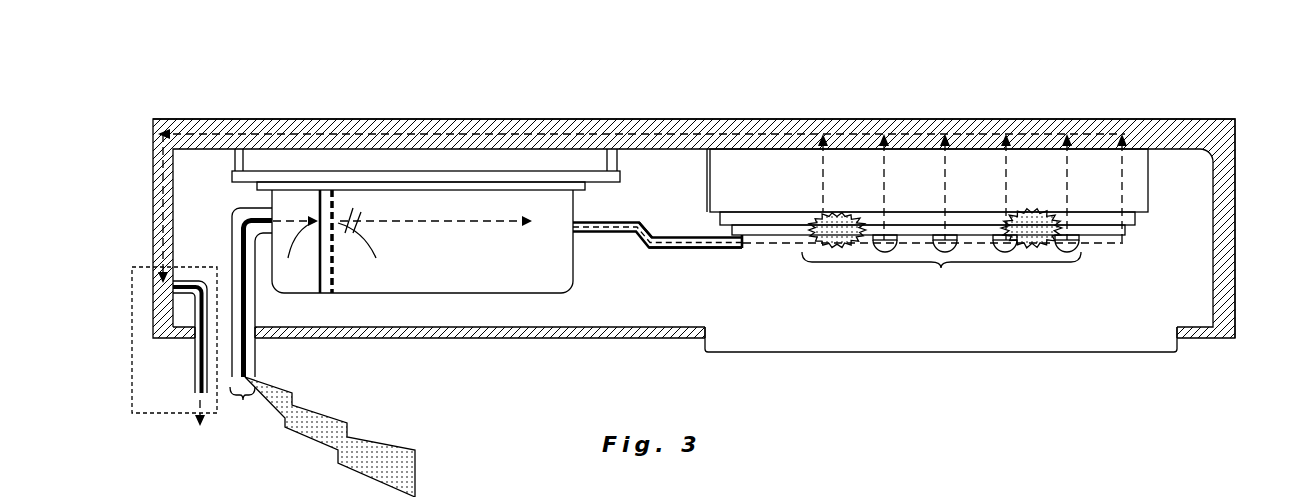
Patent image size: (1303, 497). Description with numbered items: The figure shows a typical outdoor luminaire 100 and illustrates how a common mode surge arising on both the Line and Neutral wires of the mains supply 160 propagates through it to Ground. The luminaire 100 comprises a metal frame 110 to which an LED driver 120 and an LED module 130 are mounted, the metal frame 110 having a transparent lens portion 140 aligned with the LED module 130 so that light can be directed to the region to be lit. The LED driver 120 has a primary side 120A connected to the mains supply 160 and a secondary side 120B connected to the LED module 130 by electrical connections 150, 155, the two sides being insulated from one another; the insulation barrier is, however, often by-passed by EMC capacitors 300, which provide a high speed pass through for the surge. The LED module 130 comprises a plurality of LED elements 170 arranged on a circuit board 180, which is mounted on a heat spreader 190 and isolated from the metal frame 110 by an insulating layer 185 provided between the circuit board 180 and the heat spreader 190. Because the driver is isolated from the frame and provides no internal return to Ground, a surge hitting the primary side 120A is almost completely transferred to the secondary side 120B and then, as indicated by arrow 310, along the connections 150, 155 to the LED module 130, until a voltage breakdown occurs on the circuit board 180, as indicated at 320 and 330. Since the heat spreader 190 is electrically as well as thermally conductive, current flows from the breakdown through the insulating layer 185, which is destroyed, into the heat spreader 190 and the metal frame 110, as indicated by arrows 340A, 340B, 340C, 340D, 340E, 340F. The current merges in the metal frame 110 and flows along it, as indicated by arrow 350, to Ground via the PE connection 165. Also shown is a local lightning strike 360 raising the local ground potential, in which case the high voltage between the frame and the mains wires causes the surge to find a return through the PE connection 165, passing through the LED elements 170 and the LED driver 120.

The luminaire 100 is at (1225, 105).
The metal frame 110 is at (1142, 142).
The LED driver 120 is at (427, 173).
The primary side 120A is at (296, 280).
The secondary side 120B is at (402, 241).
The LED module 130 is at (1078, 273).
The lens portion 140 is at (1035, 338).
The electrical connection 150 is at (645, 222).
The electrical connection 155 is at (648, 247).
The mains supply 160 is at (248, 320).
The PE connection 165 is at (245, 430).
The LED elements 170 is at (941, 264).
The circuit board 180 is at (1127, 233).
The insulating layer 185 is at (1127, 220).
The heat spreader 190 is at (1137, 177).
The EMC capacitors 300 is at (343, 198).
The arrow 310 is at (668, 247).
The voltage breakdown 320 is at (848, 247).
The voltage breakdown 330 is at (1035, 247).
The arrow 340A is at (821, 163).
The arrow 340B is at (880, 163).
The arrow 340C is at (943, 163).
The arrow 340D is at (1004, 163).
The arrow 340E is at (1065, 163).
The arrow 340F is at (1120, 163).
The arrow 350 is at (587, 135).
The local lightning strike 360 is at (373, 463).